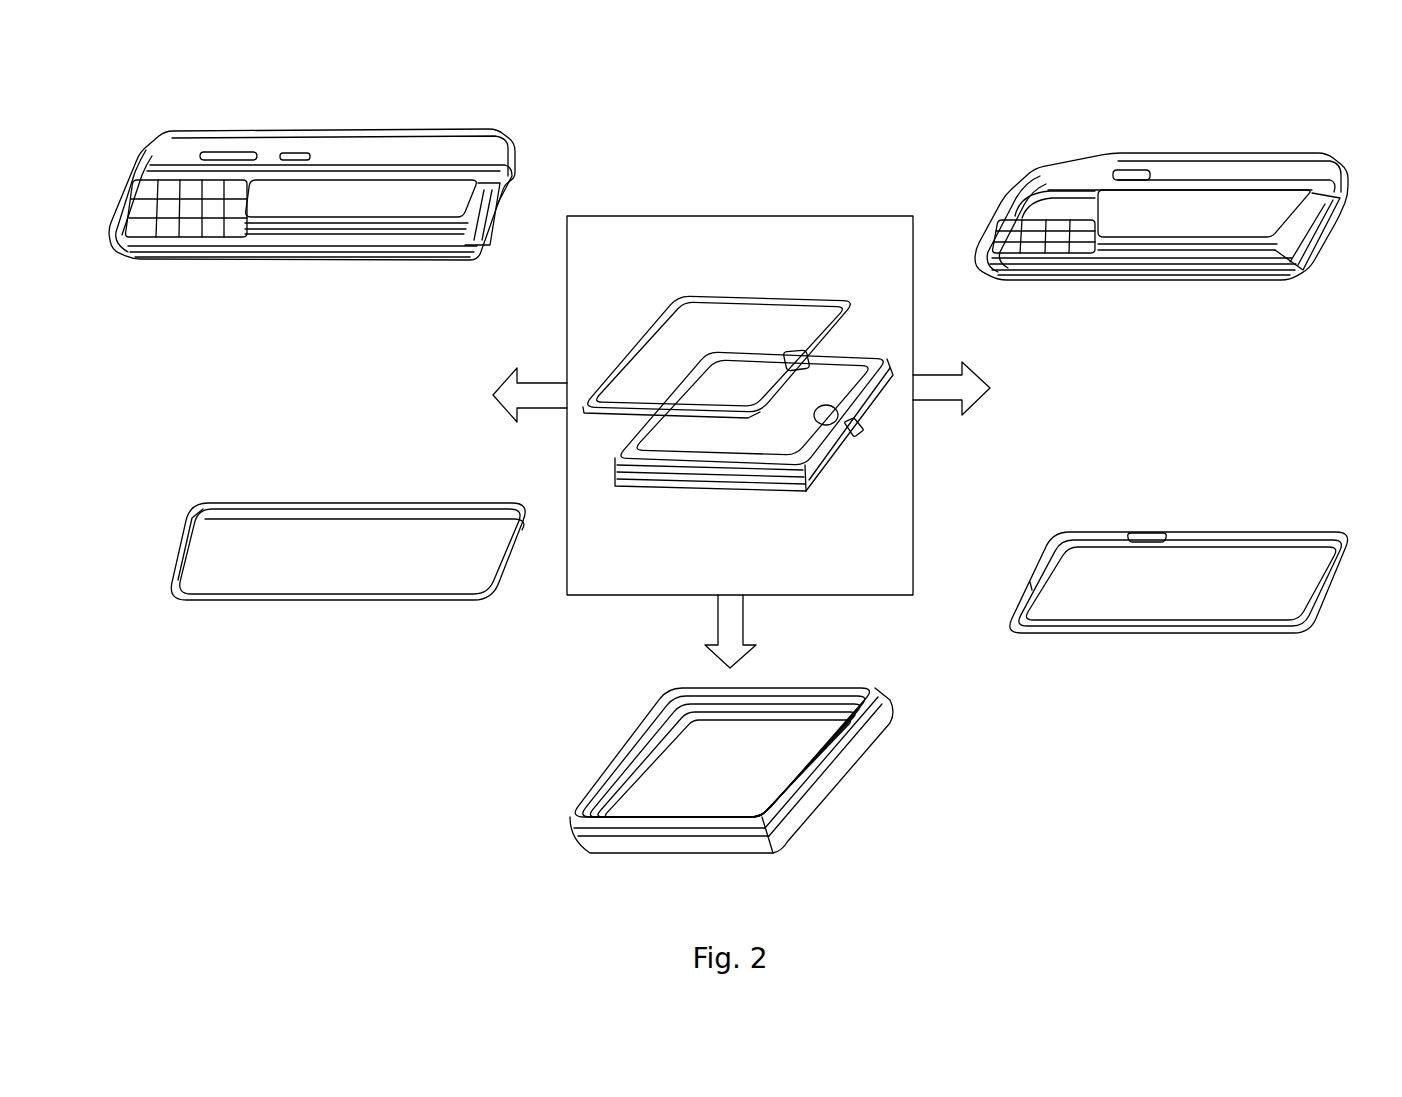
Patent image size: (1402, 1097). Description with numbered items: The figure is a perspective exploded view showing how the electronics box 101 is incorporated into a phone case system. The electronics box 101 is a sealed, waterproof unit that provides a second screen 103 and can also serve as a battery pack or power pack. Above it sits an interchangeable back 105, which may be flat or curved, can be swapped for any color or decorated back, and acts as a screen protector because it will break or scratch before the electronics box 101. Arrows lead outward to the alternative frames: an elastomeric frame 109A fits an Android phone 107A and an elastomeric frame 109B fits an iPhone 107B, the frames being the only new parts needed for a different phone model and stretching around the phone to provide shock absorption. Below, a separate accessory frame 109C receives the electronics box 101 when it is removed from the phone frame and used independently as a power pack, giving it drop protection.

The electronics box 101 is at (822, 462).
The second screen 103 is at (655, 437).
The interchangeable back 105 is at (808, 296).
The Android phone 107A is at (233, 580).
The iPhone 107B is at (1222, 615).
The elastomeric frame 109A is at (227, 128).
The elastomeric frame 109B is at (1093, 157).
The accessory frame 109C is at (893, 703).